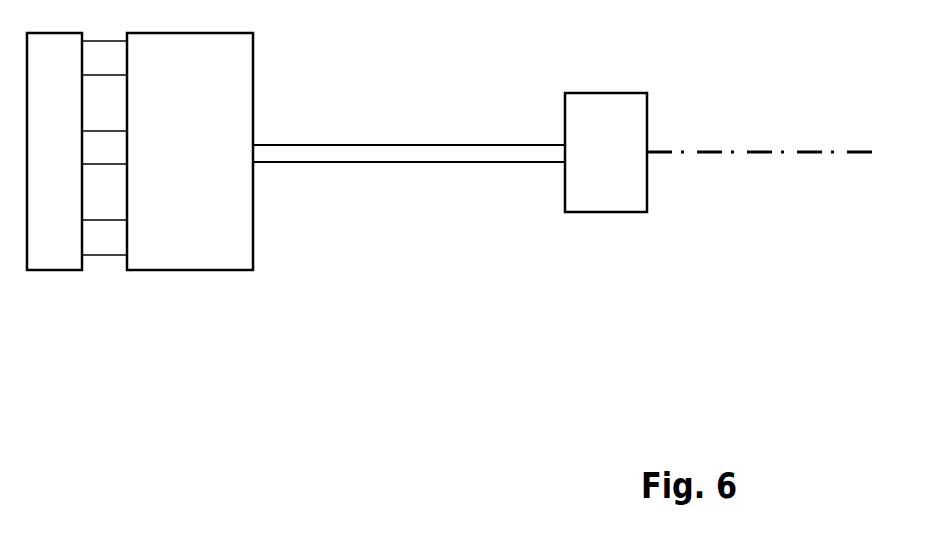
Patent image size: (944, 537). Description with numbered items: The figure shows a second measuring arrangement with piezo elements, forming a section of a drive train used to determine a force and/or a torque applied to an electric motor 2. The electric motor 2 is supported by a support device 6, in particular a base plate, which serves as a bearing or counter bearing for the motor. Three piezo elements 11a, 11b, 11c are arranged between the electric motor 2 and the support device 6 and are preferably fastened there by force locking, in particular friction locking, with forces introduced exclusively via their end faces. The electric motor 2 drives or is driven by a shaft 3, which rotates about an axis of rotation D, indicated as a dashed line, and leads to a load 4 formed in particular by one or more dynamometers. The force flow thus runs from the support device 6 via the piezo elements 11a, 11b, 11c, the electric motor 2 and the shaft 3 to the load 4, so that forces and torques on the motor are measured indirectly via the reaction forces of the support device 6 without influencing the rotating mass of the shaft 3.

The support device 6 is at (47, 164).
The electric motor 2 is at (185, 164).
The piezo element 11a is at (118, 70).
The piezo element 11b is at (118, 158).
The piezo element 11c is at (118, 248).
The shaft 3 is at (368, 143).
The load 4 is at (628, 107).
The axis of rotation D is at (712, 152).